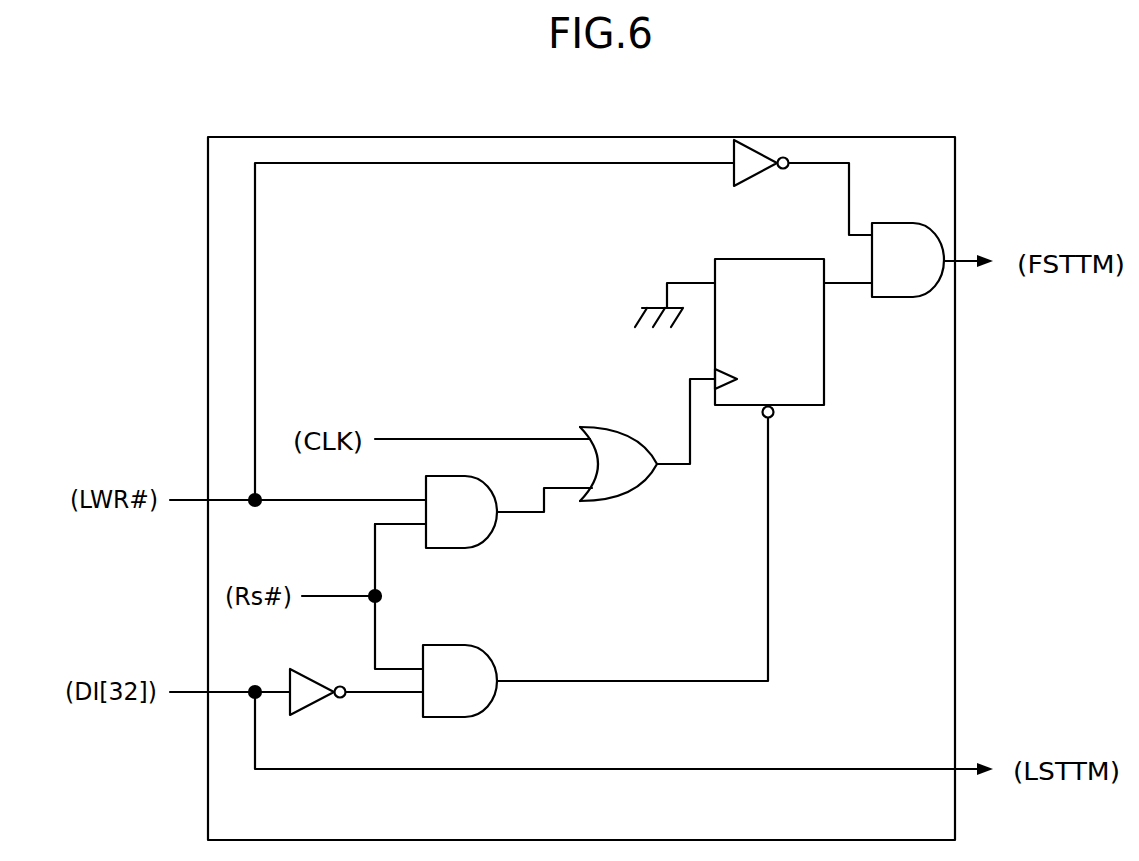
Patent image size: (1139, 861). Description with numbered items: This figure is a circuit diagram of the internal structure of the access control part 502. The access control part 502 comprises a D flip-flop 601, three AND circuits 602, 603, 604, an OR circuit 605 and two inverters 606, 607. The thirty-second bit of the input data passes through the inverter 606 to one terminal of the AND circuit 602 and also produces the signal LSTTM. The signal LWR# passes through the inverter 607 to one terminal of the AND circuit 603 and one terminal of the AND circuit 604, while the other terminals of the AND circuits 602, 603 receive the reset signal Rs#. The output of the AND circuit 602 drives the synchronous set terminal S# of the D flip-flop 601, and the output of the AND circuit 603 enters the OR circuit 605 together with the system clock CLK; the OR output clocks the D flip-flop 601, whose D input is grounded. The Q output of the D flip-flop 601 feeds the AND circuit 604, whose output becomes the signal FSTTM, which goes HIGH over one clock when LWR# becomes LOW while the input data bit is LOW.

The access control part 502 is at (671, 130).
The D flip-flop 601 is at (824, 368).
The AND circuit 602 is at (447, 645).
The AND circuit 603 is at (492, 541).
The AND circuit 604 is at (900, 223).
The OR circuit 605 is at (590, 427).
The inverter 606 is at (314, 708).
The inverter 607 is at (734, 186).